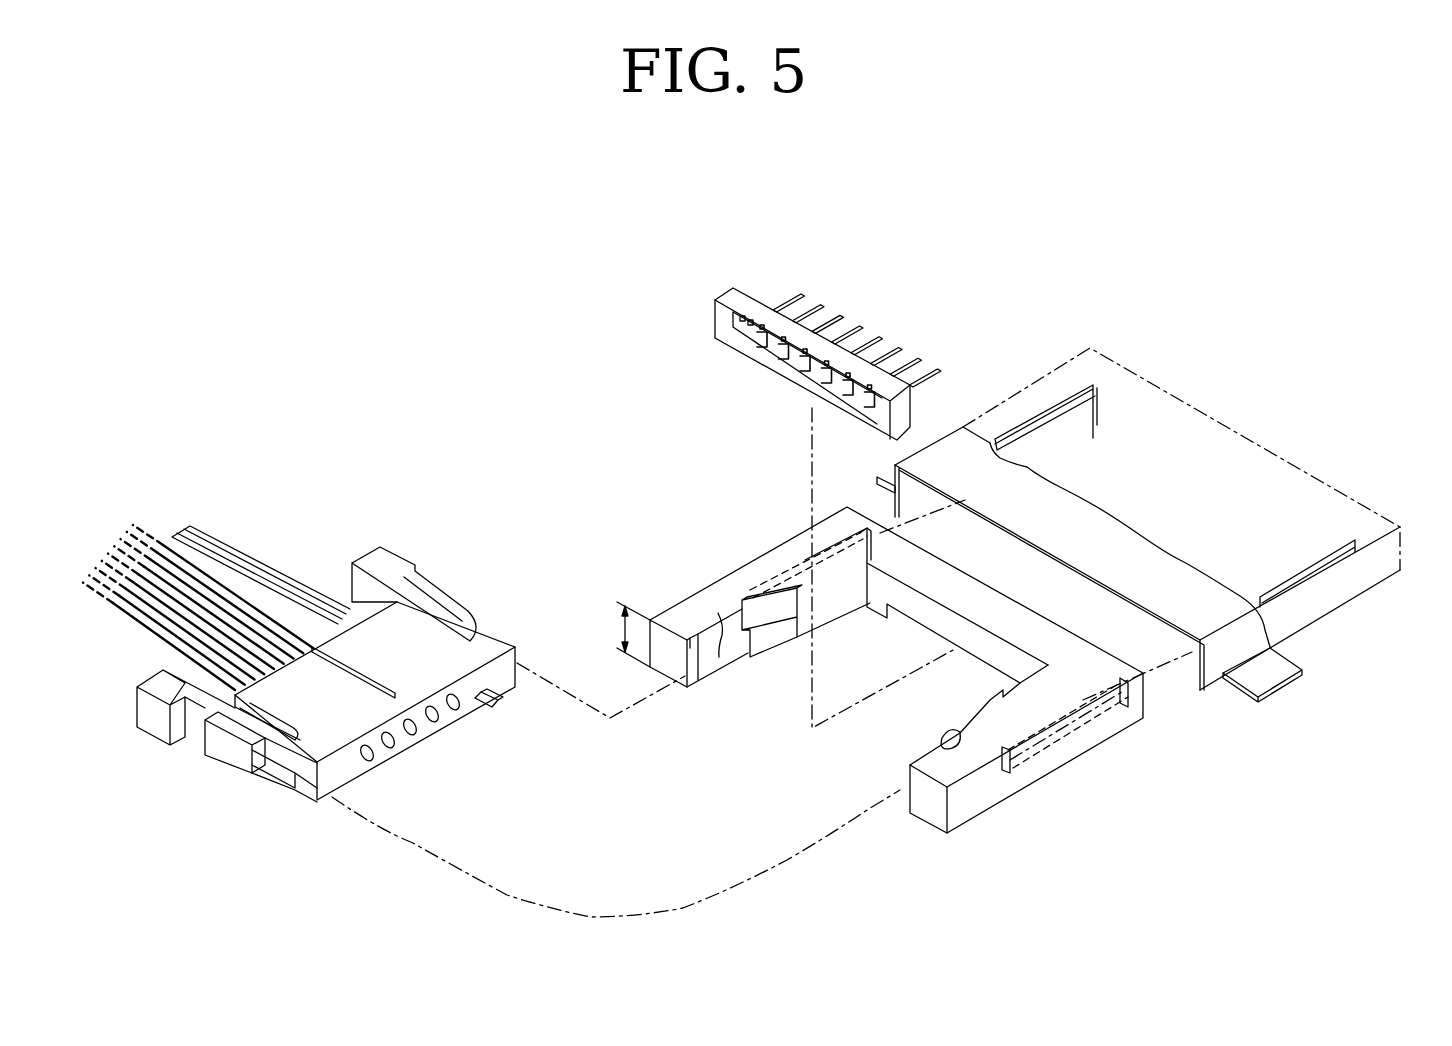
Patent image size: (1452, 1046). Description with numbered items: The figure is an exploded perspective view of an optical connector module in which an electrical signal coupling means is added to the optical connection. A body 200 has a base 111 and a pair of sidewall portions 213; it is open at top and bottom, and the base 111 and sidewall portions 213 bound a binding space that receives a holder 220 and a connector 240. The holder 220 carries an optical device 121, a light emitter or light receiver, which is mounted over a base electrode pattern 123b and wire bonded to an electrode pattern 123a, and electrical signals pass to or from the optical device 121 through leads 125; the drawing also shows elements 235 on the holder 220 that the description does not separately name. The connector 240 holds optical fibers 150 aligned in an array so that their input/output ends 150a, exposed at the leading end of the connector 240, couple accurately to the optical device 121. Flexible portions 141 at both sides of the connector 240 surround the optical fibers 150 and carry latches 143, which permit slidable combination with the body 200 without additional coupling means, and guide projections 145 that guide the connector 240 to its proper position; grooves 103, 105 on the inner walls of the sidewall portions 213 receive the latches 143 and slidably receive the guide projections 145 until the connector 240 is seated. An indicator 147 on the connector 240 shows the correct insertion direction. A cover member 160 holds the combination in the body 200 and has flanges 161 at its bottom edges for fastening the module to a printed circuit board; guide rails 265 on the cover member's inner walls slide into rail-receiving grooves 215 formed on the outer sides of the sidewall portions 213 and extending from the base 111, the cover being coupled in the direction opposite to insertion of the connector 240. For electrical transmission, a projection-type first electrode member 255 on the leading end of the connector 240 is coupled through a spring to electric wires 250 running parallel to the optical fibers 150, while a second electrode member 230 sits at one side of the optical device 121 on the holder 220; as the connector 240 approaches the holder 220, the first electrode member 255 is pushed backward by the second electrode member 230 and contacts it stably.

The latch portion 103 is at (722, 623).
The guide grooves 105 is at (770, 640).
The base 111 is at (977, 596).
The optical device 121 is at (773, 353).
The electrode pattern 123a is at (910, 369).
The base electrode pattern 123b is at (910, 339).
The leads 125 is at (830, 313).
The flexible portions 141 is at (152, 720).
The latches 143 is at (223, 753).
The guide projections 145 is at (272, 778).
The indicator 147 is at (342, 660).
The optical fibers 150 is at (160, 633).
The input/output ends of the optical fibers 150a is at (393, 748).
The cover member 160 is at (1128, 543).
The flanges 161 is at (893, 481).
The body 200 is at (910, 643).
The sidewall portions 213 is at (743, 560).
The rail-receiving grooves 215 is at (1100, 714).
The holder 220 is at (823, 330).
The second electrode member 230 is at (735, 348).
The terminal pins 235 is at (813, 306).
The connector 240 is at (486, 712).
The electric wires 250 is at (255, 568).
The first electrode member 255 is at (498, 698).
The guide rails 265 is at (1087, 415).